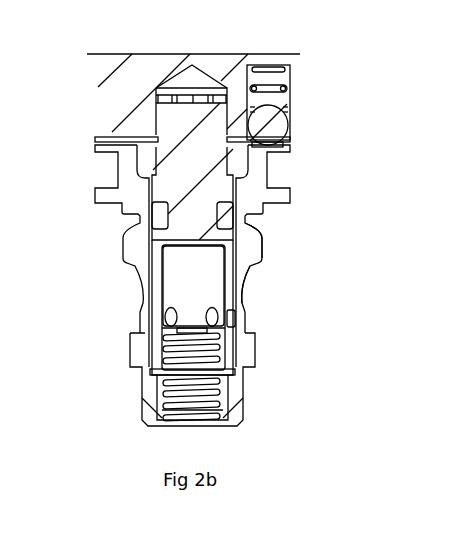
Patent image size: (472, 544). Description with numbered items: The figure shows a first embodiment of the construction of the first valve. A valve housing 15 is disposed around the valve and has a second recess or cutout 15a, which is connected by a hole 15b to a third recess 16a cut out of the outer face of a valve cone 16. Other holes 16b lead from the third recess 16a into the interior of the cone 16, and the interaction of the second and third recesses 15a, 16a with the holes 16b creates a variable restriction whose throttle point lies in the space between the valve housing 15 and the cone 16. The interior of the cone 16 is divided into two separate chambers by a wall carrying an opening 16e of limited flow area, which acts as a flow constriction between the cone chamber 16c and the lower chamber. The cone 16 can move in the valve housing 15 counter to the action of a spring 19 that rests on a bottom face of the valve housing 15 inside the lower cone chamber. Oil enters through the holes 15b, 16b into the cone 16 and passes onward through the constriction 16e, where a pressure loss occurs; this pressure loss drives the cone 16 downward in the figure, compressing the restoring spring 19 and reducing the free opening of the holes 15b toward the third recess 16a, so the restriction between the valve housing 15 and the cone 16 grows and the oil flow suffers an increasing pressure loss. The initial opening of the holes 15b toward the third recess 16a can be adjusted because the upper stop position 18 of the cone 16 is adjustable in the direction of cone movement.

The upper stop position 18 is at (190, 170).
The valve housing 15 is at (252, 192).
The second recess 15a is at (250, 275).
The hole 15b is at (242, 302).
The valve cone 16 is at (223, 352).
The third recess 16a is at (232, 318).
The holes 16b is at (170, 317).
The cone chamber 16c is at (170, 272).
The opening 16e is at (185, 330).
The spring 19 is at (195, 393).